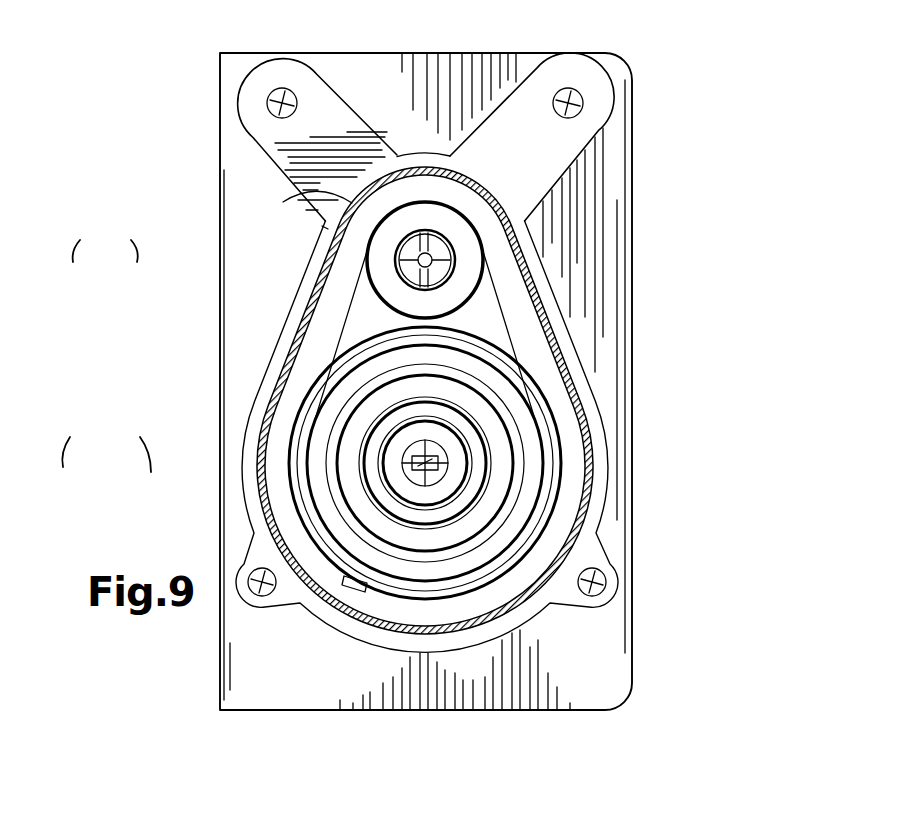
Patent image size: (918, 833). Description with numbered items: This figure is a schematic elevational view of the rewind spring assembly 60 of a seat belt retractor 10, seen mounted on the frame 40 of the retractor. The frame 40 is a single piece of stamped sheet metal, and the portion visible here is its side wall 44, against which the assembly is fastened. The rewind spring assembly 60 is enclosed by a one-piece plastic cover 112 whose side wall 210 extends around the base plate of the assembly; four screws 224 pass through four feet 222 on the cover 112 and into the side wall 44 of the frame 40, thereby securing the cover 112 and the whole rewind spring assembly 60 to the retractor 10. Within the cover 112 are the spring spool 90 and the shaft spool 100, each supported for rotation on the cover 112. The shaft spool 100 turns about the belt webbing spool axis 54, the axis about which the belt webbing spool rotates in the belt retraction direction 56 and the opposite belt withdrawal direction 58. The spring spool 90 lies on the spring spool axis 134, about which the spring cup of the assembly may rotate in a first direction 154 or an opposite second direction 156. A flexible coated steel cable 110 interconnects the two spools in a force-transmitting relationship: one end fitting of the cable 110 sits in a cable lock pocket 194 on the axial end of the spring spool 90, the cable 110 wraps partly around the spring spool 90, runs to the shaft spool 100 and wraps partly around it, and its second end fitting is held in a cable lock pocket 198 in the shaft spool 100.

The retractor 10 is at (740, 212).
The frame 40 is at (653, 275).
The side wall 44 is at (610, 350).
The belt webbing spool axis 54 is at (435, 252).
The belt retraction direction 56 is at (73, 263).
The belt withdrawal direction 58 is at (138, 263).
The rewind spring assembly 60 is at (590, 225).
The spring spool 90 is at (290, 405).
The shaft spool 100 is at (355, 295).
The cable 110 is at (337, 343).
The cover 112 is at (410, 152).
The spring spool axis 134 is at (450, 458).
The first direction 154 is at (63, 467).
The second direction 156 is at (151, 472).
The cable lock pocket 194 is at (363, 592).
The cable lock pocket 198 is at (283, 202).
The side wall 210 is at (328, 228).
The feet 222 is at (670, 634).
The screws 224 is at (268, 33).